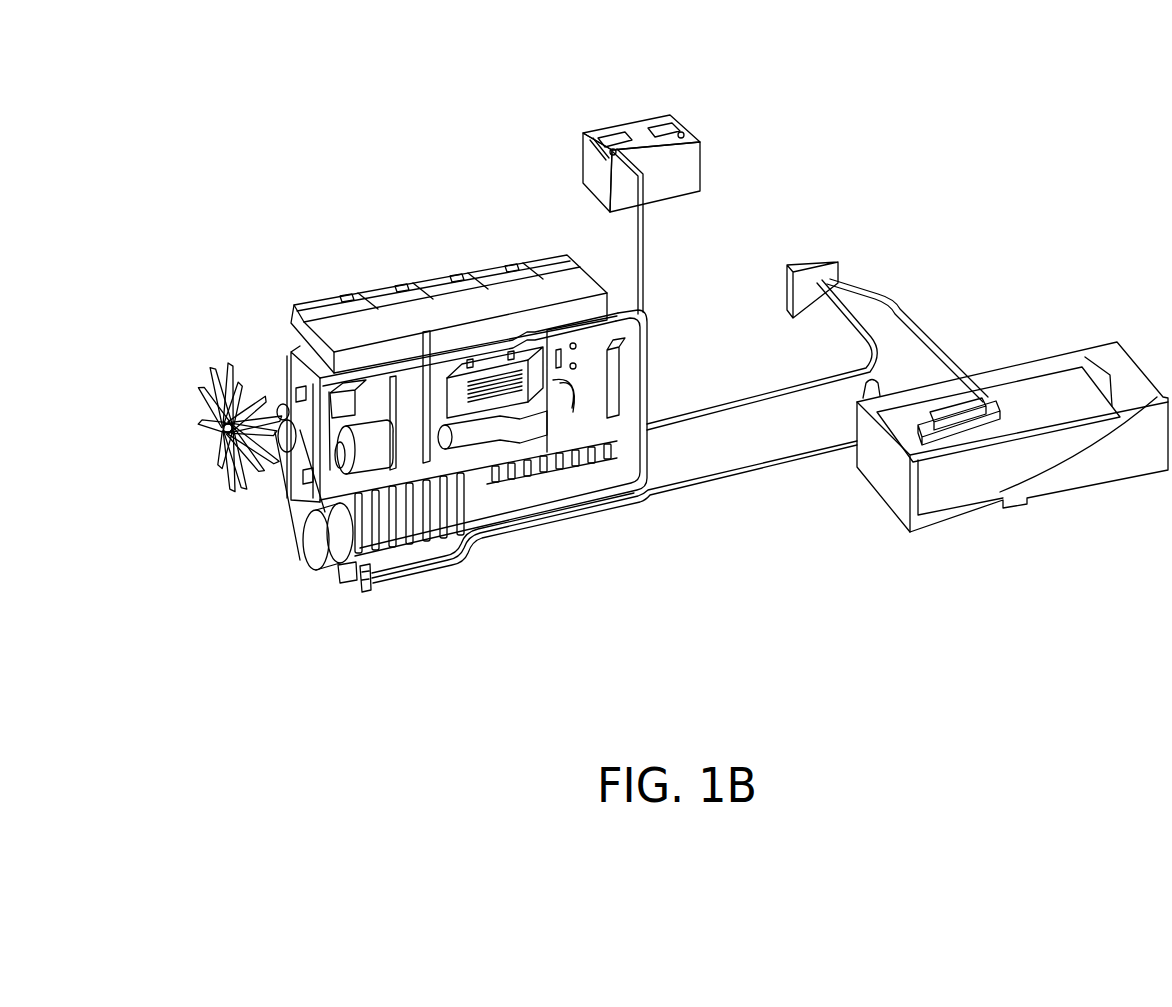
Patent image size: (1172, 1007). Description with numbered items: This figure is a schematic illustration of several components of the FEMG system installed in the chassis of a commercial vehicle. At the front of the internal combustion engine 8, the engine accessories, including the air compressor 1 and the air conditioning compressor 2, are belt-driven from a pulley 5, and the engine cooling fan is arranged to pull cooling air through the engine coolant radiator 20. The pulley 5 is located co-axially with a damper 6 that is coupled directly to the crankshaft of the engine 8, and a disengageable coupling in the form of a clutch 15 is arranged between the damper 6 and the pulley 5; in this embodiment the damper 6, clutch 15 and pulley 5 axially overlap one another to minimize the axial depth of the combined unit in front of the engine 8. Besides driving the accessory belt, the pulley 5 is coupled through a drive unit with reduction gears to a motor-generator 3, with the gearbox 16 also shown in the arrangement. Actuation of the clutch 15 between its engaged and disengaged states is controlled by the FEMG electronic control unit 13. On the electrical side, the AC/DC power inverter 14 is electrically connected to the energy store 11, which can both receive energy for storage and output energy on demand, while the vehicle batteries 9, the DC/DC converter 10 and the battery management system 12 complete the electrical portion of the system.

The air compressor 1 is at (368, 448).
The air conditioning compressor 2 is at (343, 398).
The motor-generator 3 is at (345, 557).
The pulley 5 is at (308, 478).
The damper 6 is at (293, 408).
The engine 8 is at (521, 268).
The vehicle batteries 9 is at (618, 122).
The DC/DC converter 10 is at (368, 588).
The energy store 11 is at (960, 486).
The battery management system 12 is at (956, 412).
The FEMG electronic control unit 13 is at (816, 264).
The AC/DC power inverter 14 is at (372, 580).
The clutch 15 is at (282, 412).
The gearbox 16 is at (293, 528).
The engine coolant radiator 20 is at (220, 437).